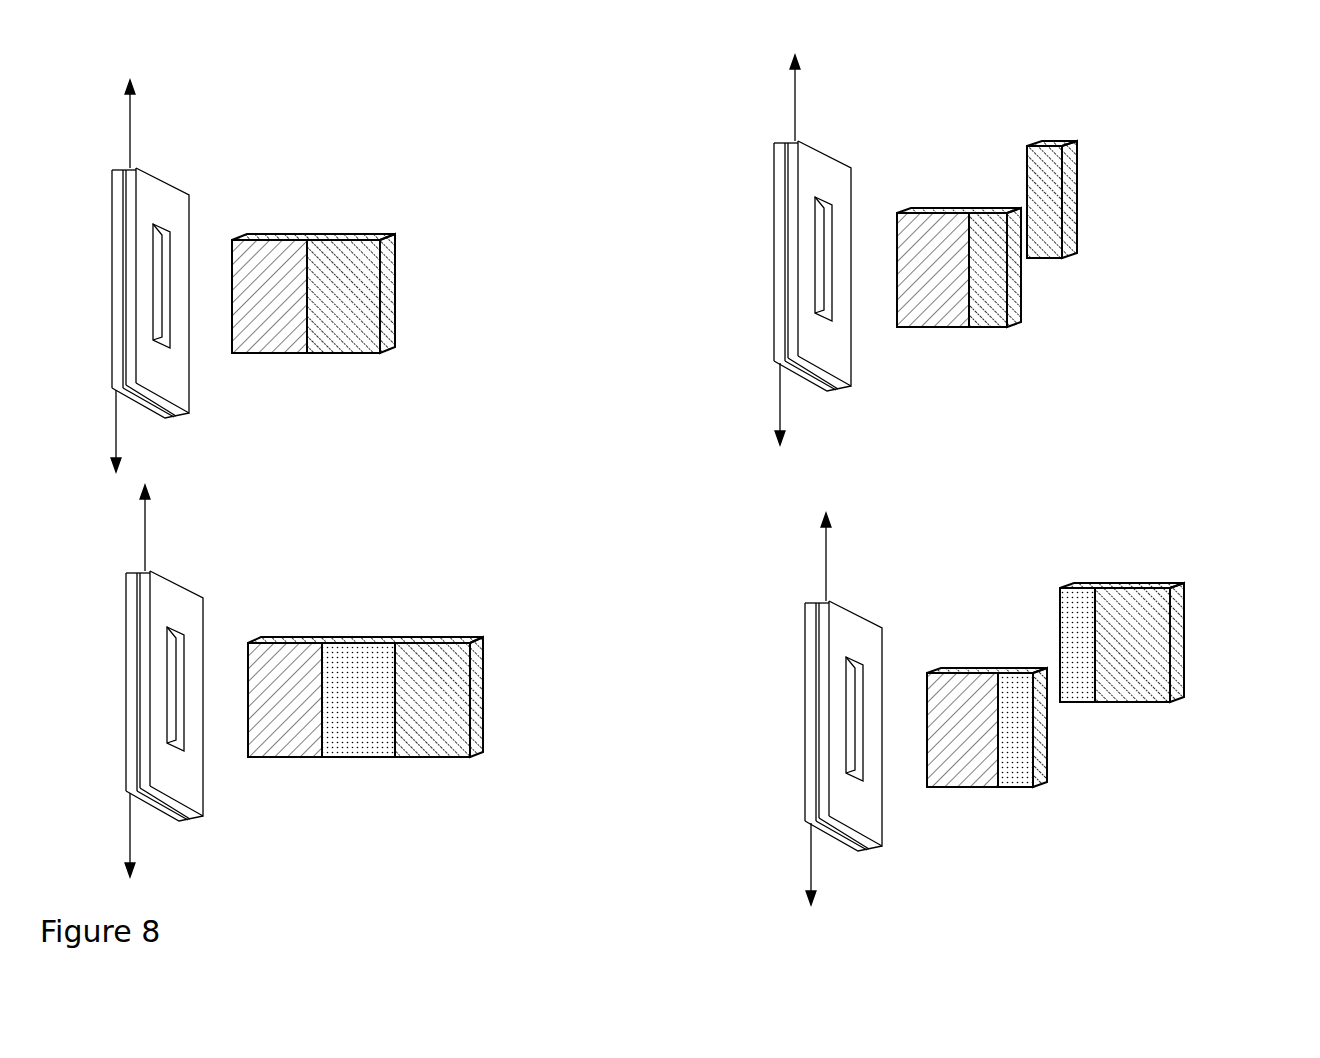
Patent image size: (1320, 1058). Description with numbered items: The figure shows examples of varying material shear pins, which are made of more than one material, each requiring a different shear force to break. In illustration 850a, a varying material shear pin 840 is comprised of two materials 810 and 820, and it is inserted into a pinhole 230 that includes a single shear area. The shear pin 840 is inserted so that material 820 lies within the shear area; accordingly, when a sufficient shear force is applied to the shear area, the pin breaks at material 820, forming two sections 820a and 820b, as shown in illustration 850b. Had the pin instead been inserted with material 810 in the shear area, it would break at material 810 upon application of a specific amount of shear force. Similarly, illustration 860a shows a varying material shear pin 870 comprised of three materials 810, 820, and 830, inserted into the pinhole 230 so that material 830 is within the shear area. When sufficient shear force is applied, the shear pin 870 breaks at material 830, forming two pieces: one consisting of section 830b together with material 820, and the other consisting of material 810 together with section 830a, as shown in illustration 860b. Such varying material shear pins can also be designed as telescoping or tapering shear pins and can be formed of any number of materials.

The pinhole 230 is at (152, 295).
The material 810 is at (615, 513).
The material 820 is at (738, 513).
The section 820a is at (996, 282).
The section 820b is at (1052, 211).
The material 830 is at (358, 714).
The section 830a is at (1019, 743).
The section 830b is at (1077, 659).
The varying material shear pin 840 is at (397, 288).
The varying material shear pin 870 is at (488, 705).
The illustration 850a is at (248, 442).
The illustration 850b is at (899, 443).
The illustration 860a is at (247, 857).
The illustration 860b is at (907, 885).